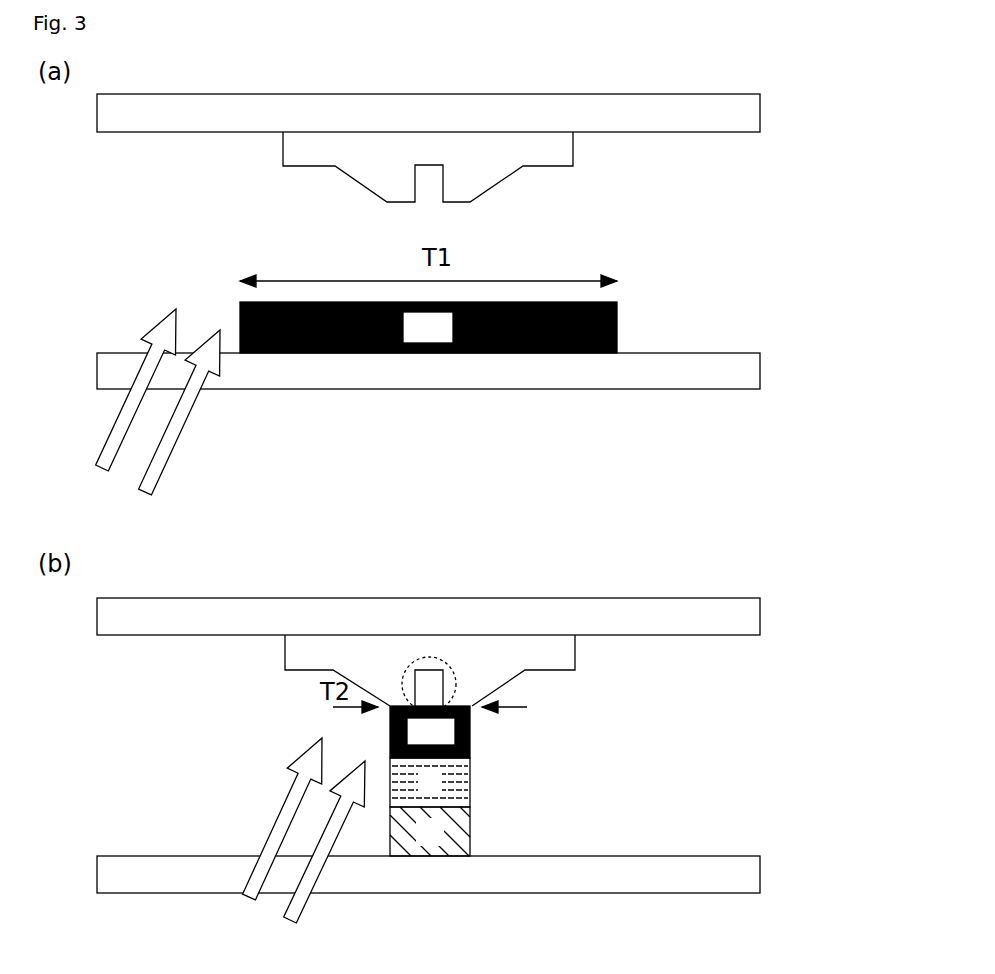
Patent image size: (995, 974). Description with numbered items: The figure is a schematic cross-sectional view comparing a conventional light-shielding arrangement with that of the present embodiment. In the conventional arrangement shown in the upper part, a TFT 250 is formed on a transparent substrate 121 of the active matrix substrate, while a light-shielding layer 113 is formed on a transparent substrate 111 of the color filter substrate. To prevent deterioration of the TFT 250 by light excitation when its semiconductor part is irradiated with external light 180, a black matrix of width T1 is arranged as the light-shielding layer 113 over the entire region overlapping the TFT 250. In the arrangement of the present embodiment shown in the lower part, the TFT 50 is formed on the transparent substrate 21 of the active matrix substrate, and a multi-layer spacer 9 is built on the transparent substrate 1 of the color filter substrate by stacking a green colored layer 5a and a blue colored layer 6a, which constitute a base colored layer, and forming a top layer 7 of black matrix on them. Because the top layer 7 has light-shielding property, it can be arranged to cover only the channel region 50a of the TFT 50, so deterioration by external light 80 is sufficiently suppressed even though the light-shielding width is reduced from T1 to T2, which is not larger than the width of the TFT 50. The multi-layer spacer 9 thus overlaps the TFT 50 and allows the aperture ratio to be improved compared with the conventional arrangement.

The transparent substrate 121 is at (748, 113).
The TFT 250 is at (573, 148).
The light-shielding layer 113 is at (617, 318).
The transparent substrate 111 is at (742, 375).
The external light 180 is at (103, 463).
The transparent substrate 21 is at (745, 620).
The TFT 50 is at (575, 652).
The channel region 50a is at (426, 656).
The top layer 7 is at (470, 727).
The blue colored layer 6a is at (460, 787).
The green colored layer 5a is at (459, 831).
The multi-layer spacer 9 is at (478, 781).
The transparent substrate 1 is at (745, 877).
The external light 80 is at (245, 895).